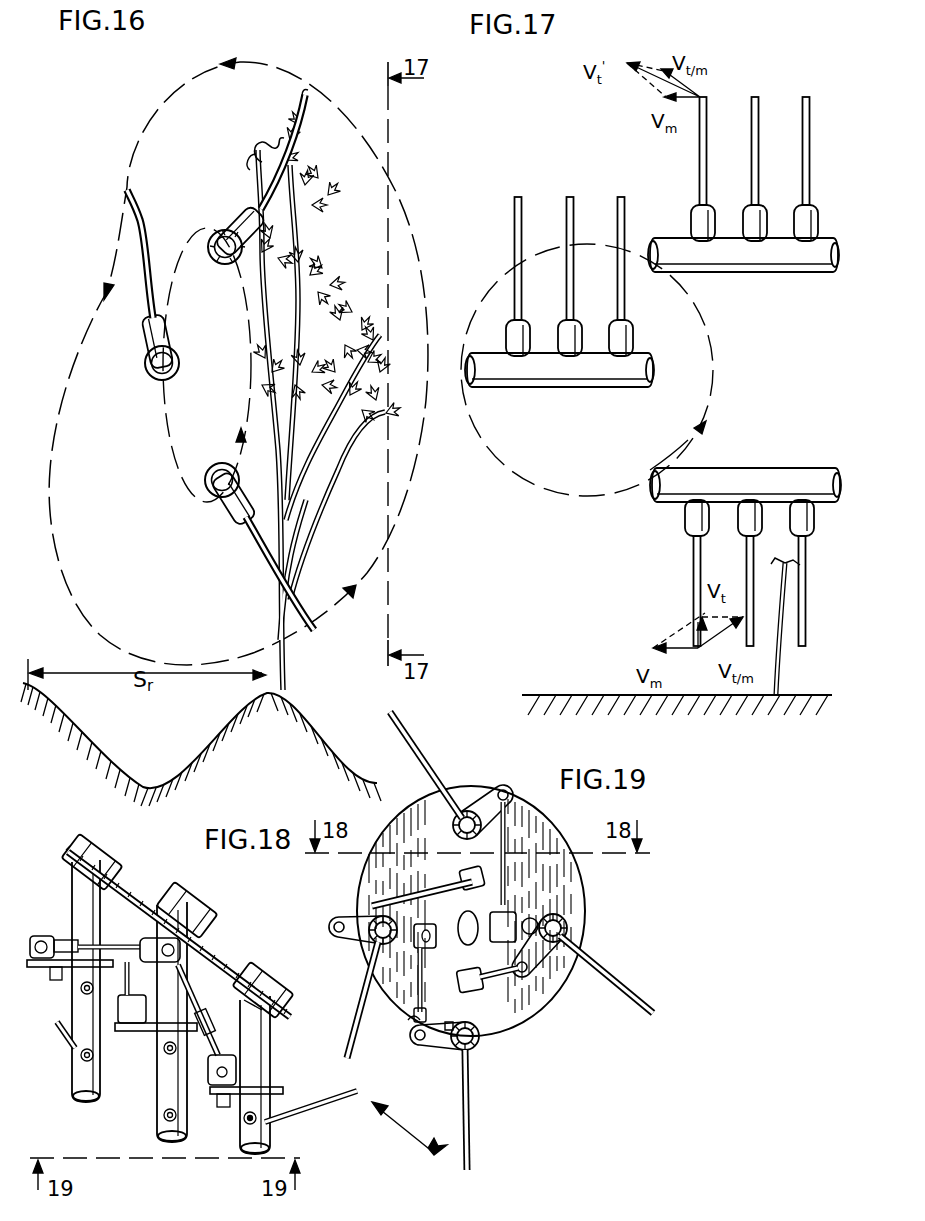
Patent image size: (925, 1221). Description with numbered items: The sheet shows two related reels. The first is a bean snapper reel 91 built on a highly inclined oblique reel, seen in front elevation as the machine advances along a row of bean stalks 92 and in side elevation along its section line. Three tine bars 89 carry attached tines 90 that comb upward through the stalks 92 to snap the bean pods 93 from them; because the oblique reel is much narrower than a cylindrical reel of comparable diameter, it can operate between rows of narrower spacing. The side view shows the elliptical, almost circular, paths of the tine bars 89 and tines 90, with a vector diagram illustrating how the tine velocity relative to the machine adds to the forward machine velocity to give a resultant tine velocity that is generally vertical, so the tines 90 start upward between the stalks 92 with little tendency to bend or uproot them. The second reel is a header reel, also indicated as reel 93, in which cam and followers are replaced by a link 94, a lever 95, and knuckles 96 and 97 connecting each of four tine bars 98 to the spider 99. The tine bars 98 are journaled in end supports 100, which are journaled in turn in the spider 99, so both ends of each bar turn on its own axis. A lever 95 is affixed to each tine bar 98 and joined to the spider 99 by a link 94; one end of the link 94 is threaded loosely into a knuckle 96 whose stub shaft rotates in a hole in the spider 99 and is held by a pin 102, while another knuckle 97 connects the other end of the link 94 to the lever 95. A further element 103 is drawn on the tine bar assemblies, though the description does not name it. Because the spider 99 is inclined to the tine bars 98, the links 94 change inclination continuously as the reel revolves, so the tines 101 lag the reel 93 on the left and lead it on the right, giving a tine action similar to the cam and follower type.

In FIG. 16, the tine bars 89 is at (218, 498).
In FIG. 17, the tine bars 89 is at (668, 508).
In FIG. 16, the tines 90 is at (268, 576).
In FIG. 17, the tines 90 is at (691, 585).
In FIG. 16, the bean snapper reel 91 is at (149, 435).
In FIG. 17, the bean snapper reel 91 is at (538, 133).
In FIG. 16, the bean stalks 92 is at (333, 487).
In FIG. 17, the bean stalks 92 is at (782, 672).
In FIG. 16, the bean pods / header reel 93 is at (262, 151).
In FIG. 18, the bean pods / header reel 93 is at (250, 884).
In FIG. 19, the bean pods / header reel 93 is at (612, 903).
In FIG. 18, the link 94 is at (83, 918).
In FIG. 19, the link 94 is at (423, 993).
In FIG. 18, the lever 95 is at (237, 1108).
In FIG. 19, the lever 95 is at (449, 1060).
In FIG. 18, the knuckle 96 is at (204, 1008).
In FIG. 19, the knuckle 96 is at (430, 947).
In FIG. 18, the knuckle 97 is at (53, 933).
In FIG. 19, the knuckle 97 is at (398, 1033).
In FIG. 18, the tine bars 98 is at (269, 1137).
In FIG. 19, the tine bars 98 is at (480, 1036).
In FIG. 18, the spider 99 is at (292, 1012).
In FIG. 19, the spider 99 is at (566, 1013).
In FIG. 18, the end supports 100 is at (283, 1058).
In FIG. 18, the tines 101 is at (326, 1095).
In FIG. 19, the tines 101 is at (607, 975).
In FIG. 18, the pin 102 is at (233, 958).
In FIG. 19, the pin 102 is at (410, 1050).
In FIG. 18, the pivot cylinder 103 is at (212, 915).
In FIG. 19, the pivot cylinder 103 is at (466, 912).